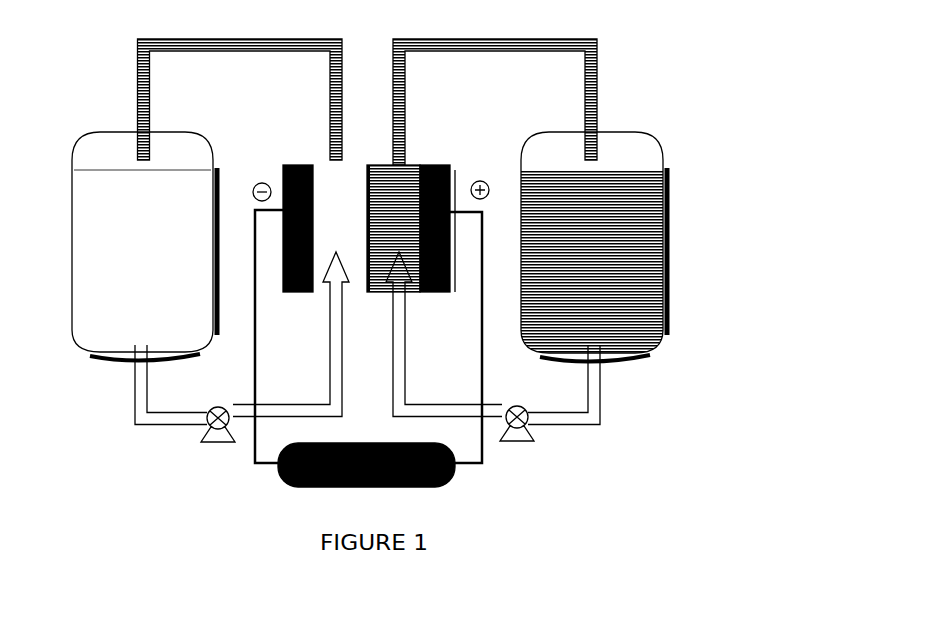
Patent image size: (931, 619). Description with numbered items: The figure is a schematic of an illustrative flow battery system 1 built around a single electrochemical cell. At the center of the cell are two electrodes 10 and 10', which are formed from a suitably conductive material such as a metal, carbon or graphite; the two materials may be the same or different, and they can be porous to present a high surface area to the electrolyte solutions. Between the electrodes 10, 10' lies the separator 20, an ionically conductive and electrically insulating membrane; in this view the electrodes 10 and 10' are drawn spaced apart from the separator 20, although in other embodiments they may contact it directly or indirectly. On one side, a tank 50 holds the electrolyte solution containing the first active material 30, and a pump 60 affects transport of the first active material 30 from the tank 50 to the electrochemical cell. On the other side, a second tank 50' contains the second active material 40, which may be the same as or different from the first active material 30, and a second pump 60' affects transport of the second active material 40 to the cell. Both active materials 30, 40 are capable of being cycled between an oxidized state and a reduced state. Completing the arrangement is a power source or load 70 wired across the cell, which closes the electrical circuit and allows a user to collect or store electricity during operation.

The flow battery system 1 is at (699, 52).
The electrode 10 is at (281, 201).
The electrode 10' is at (467, 204).
The separator 20 is at (406, 168).
The first active material 30 is at (142, 214).
The second active material 40 is at (592, 262).
The tank 50 is at (139, 216).
The second tank 50' is at (614, 224).
The pump 60 is at (191, 441).
The second pump 60' is at (555, 438).
The power source or load 70 is at (459, 476).